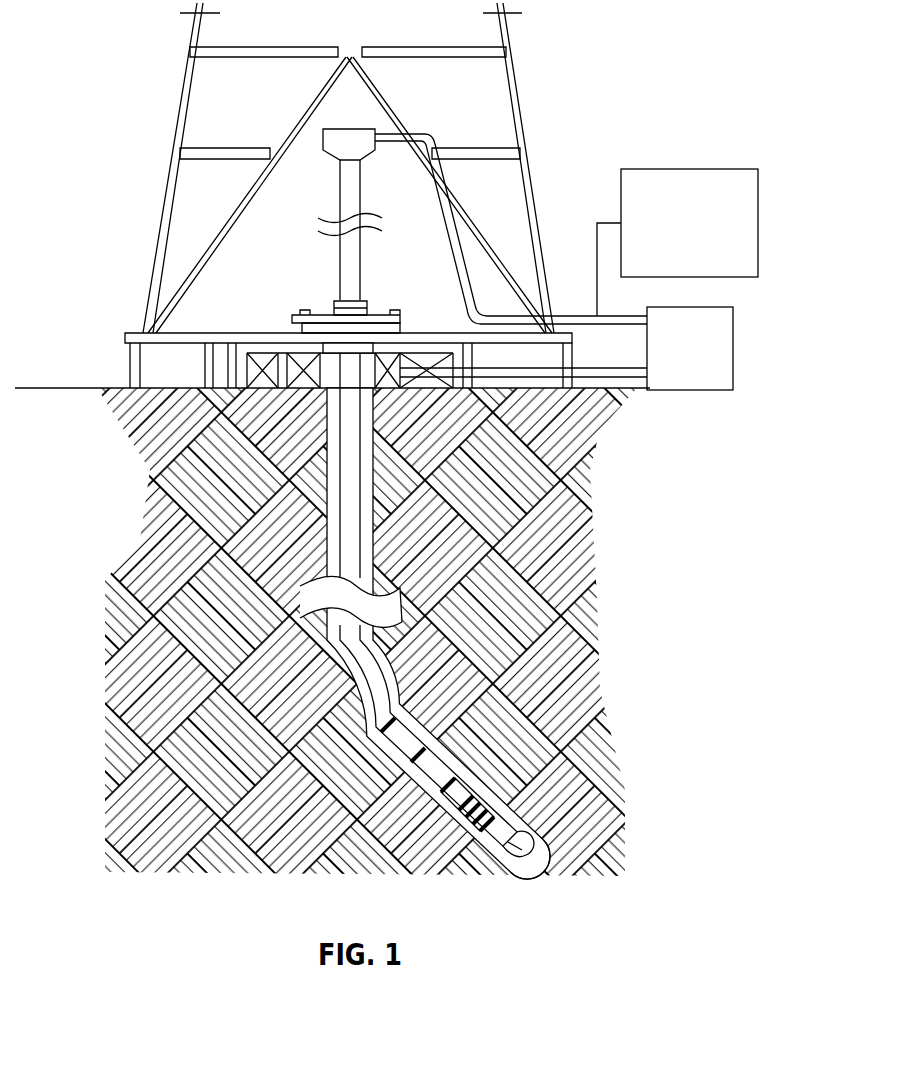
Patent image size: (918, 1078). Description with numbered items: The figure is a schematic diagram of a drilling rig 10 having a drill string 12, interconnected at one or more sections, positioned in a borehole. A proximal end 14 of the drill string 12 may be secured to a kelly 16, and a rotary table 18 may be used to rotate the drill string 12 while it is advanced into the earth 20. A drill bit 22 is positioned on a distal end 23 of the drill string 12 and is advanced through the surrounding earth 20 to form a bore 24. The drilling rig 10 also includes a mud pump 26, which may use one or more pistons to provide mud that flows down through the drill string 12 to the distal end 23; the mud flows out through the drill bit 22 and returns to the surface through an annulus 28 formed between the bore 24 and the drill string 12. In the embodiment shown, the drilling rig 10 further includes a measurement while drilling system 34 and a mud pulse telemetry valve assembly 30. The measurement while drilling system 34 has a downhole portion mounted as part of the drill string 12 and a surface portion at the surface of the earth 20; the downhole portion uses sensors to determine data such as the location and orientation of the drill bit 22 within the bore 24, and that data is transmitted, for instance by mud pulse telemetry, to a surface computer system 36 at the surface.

The drilling rig 10 is at (566, 132).
The drill string 12 is at (368, 700).
The proximal end 14 is at (345, 384).
The kelly 16 is at (363, 266).
The rotary table 18 is at (408, 320).
The earth 20 is at (81, 388).
The drill bit 22 is at (514, 860).
The distal end 23 is at (488, 850).
The bore 24 is at (477, 789).
The mud pump 26 is at (735, 348).
The annulus 28 is at (388, 755).
The mud pulse telemetry valve assembly 30 is at (418, 742).
The measurement while drilling (MWD) system 34 is at (443, 777).
The surface computer system 36 is at (703, 169).